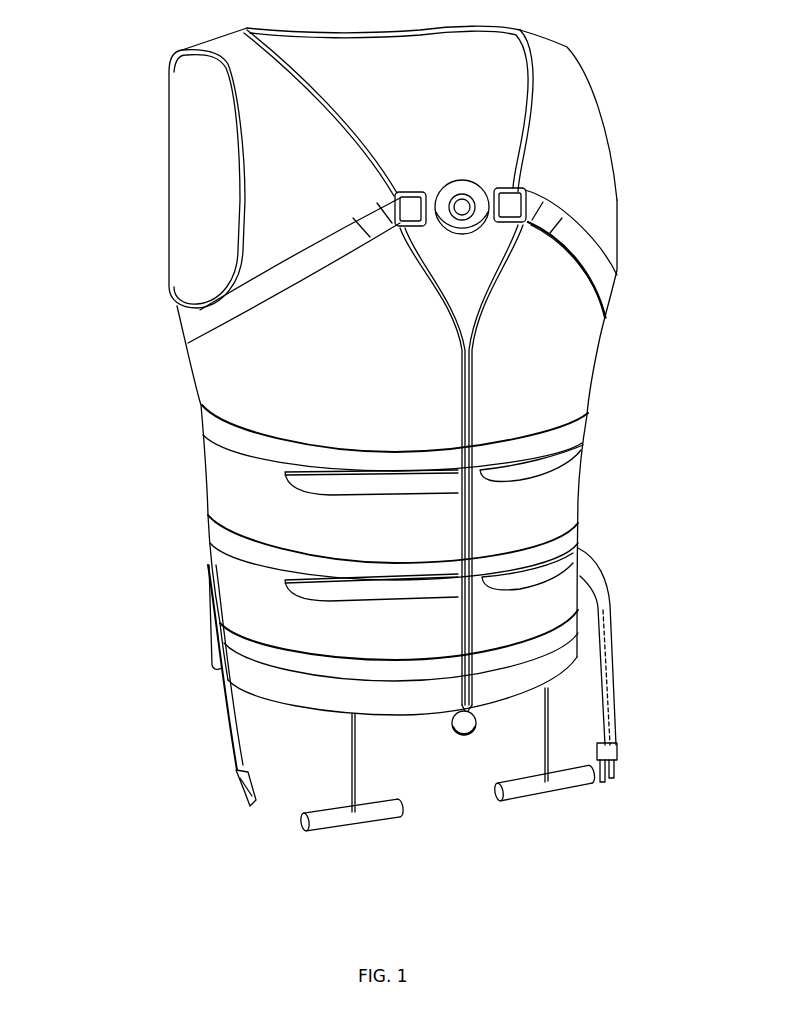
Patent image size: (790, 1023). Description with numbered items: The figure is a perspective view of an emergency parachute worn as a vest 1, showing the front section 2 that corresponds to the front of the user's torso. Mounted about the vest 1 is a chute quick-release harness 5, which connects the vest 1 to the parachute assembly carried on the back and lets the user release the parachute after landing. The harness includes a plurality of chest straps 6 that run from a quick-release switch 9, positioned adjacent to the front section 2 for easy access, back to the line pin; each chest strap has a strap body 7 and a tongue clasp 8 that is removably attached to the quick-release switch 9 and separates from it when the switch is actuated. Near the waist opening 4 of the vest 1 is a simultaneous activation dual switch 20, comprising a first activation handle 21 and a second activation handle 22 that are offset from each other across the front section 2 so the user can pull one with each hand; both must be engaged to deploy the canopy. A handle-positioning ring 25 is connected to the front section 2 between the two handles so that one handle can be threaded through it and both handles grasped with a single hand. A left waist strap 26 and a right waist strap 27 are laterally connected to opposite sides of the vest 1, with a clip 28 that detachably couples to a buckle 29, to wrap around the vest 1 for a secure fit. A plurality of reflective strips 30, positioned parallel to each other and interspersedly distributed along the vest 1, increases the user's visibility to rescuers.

The vest 1 is at (126, 145).
The front section 2 is at (378, 372).
The waist opening 4 is at (430, 721).
The chute quick-release harness 5 is at (468, 146).
The plurality of chest straps 6 is at (334, 224).
The strap body 7 is at (340, 258).
The tongue clasp 8 is at (411, 192).
The quick-release switch 9 is at (466, 235).
The simultaneous activation dual switch 20 is at (583, 826).
The first activation handle 21 is at (348, 832).
The second activation handle 22 is at (550, 795).
The handle-positioning ring 25 is at (478, 723).
The left waist strap 26 is at (614, 668).
The right waist strap 27 is at (232, 752).
The clip 28 is at (620, 767).
The buckle 29 is at (240, 798).
The plurality of reflective strips 30 is at (496, 443).